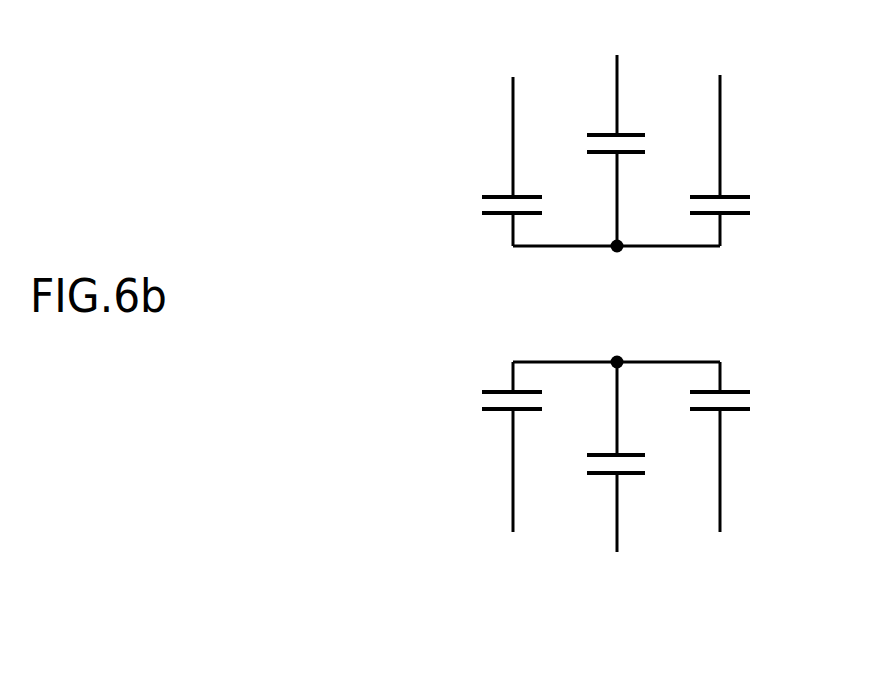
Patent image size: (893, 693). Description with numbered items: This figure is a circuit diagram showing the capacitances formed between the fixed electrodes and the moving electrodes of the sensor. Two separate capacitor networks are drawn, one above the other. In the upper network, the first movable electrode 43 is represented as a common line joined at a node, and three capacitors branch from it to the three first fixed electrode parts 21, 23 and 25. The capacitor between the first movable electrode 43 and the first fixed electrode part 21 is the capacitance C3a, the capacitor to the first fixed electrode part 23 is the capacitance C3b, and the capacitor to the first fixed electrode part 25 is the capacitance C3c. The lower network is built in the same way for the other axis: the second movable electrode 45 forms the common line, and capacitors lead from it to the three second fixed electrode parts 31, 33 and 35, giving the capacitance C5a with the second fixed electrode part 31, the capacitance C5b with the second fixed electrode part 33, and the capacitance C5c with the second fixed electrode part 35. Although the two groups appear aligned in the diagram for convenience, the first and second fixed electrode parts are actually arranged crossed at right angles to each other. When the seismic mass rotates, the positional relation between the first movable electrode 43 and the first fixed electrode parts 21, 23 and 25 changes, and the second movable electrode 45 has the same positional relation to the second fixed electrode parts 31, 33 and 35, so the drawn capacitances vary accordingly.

The first fixed electrode part 21 is at (504, 161).
The first fixed electrode part 23 is at (625, 150).
The first fixed electrode part 25 is at (731, 160).
The first movable electrode 43 is at (615, 209).
The second fixed electrode part 31 is at (504, 447).
The second fixed electrode part 33 is at (627, 457).
The second fixed electrode part 35 is at (731, 447).
The second movable electrode 45 is at (617, 395).
The capacitance C3a is at (483, 203).
The capacitance C3b is at (588, 147).
The capacitance C3c is at (698, 203).
The capacitance C5a is at (493, 398).
The capacitance C5b is at (588, 465).
The capacitance C5c is at (703, 407).